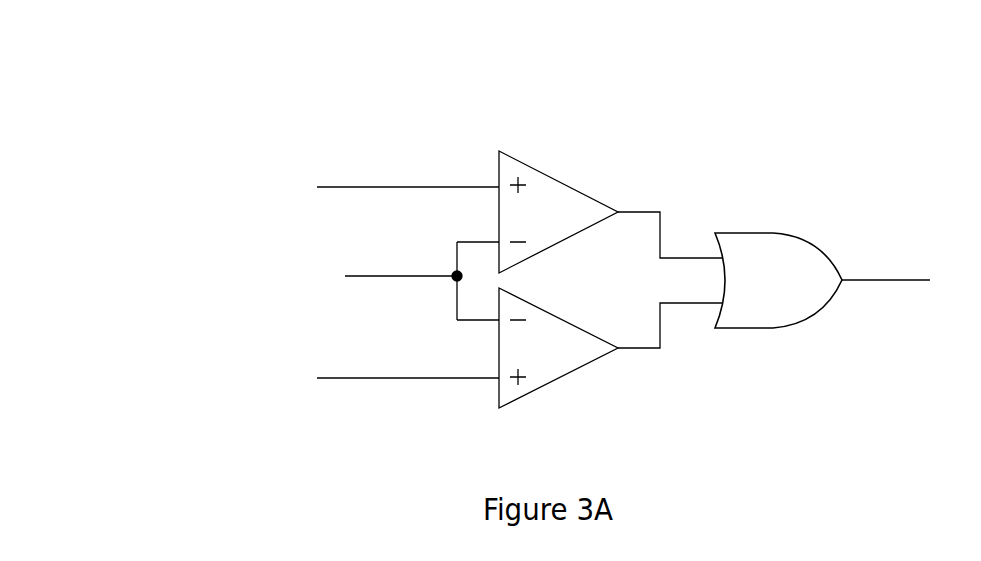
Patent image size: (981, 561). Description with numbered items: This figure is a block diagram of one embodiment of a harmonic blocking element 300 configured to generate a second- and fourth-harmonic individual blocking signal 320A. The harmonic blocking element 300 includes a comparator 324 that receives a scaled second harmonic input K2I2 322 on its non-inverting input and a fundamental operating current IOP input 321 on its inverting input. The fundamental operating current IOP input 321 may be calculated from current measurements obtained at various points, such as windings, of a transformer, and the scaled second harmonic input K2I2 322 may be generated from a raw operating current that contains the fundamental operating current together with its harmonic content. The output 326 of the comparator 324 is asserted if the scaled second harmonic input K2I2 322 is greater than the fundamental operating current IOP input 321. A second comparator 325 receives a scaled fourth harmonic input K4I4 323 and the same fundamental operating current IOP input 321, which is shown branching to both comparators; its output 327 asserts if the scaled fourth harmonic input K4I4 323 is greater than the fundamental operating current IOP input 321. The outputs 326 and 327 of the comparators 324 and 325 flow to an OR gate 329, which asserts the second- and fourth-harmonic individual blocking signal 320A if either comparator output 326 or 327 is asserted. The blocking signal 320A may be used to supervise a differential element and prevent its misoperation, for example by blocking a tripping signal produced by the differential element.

The harmonic blocking element 300 is at (132, 60).
The fundamental operating current I_OP input 321 is at (375, 276).
The scaled second harmonic input K2I2 322 is at (386, 187).
The scaled fourth harmonic input K4I4 323 is at (385, 378).
The comparator 324 is at (572, 221).
The comparator 325 is at (575, 356).
The output of the comparator 326 is at (650, 212).
The output of the comparator 327 is at (650, 349).
The OR gate 329 is at (792, 290).
The second- and fourth-harmonic individual blocking signal 320A is at (902, 280).